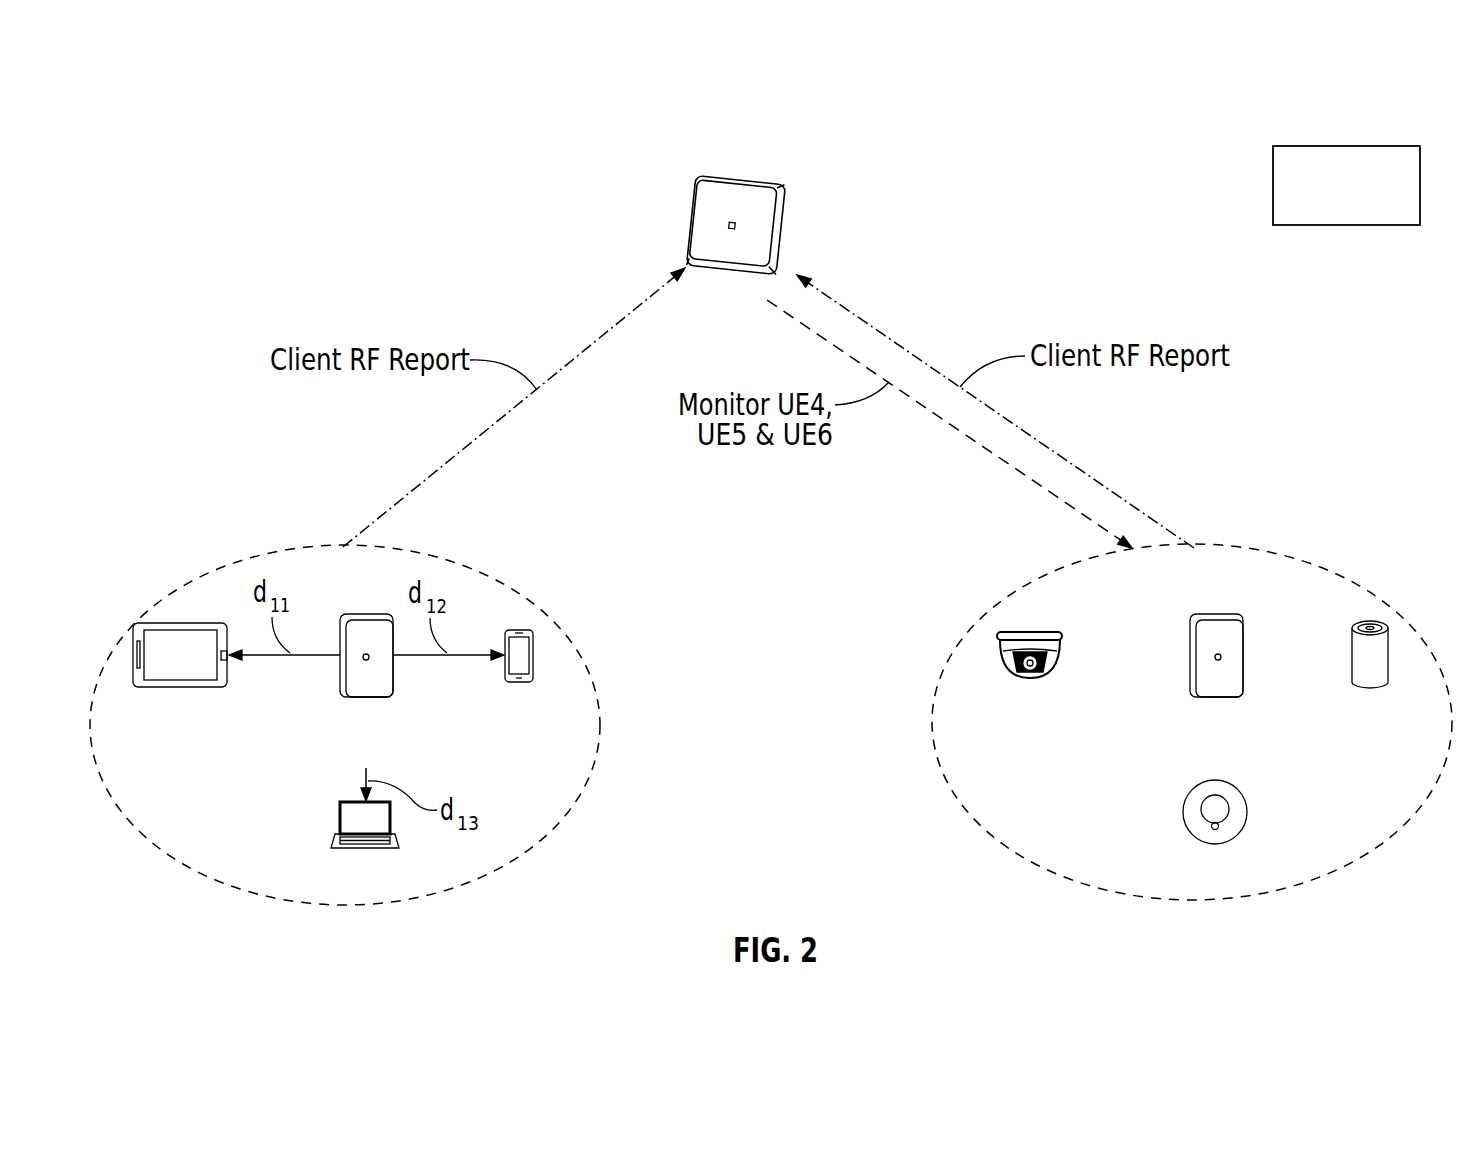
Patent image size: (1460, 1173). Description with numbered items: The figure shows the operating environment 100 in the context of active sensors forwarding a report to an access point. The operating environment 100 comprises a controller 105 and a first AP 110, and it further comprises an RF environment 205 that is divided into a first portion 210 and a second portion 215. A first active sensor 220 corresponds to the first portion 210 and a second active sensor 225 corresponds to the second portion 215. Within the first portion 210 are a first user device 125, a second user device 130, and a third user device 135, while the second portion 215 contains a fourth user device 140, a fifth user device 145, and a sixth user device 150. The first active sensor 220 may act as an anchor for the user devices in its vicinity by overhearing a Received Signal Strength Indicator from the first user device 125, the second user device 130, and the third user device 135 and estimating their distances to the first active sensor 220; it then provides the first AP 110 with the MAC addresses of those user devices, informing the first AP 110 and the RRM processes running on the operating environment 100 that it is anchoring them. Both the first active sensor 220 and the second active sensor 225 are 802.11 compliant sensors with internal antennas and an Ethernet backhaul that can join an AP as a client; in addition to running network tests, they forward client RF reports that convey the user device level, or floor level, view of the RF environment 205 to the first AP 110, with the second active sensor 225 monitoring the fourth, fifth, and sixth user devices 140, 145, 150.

The operating environment 100 is at (158, 116).
The controller 105 is at (1385, 146).
The first AP 110 is at (695, 194).
The first user device 125 is at (168, 624).
The second user device 130 is at (520, 630).
The third user device 135 is at (340, 808).
The fourth user device 140 is at (1023, 630).
The fifth user device 145 is at (1370, 621).
The sixth user device 150 is at (1183, 812).
The RF environment 205 is at (928, 531).
The first portion 210 is at (604, 721).
The second portion 215 is at (936, 722).
The first active sensor 220 is at (364, 614).
The second active sensor 225 is at (1215, 614).